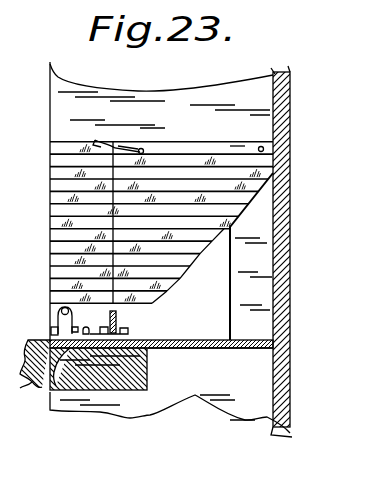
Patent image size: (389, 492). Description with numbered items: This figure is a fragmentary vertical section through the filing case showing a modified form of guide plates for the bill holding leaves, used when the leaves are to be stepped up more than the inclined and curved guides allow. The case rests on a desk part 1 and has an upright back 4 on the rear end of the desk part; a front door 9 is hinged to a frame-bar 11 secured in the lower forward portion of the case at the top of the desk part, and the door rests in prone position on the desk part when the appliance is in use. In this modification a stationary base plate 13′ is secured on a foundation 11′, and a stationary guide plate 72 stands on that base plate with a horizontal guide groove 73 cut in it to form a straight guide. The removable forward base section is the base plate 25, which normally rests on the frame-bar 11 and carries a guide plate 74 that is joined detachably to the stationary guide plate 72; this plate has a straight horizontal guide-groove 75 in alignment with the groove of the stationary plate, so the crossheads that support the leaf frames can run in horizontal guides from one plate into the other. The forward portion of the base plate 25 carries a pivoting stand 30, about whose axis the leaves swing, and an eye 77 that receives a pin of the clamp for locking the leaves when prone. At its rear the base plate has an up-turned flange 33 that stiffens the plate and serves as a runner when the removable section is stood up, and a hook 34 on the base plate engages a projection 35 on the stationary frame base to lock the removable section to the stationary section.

The desk part 1 is at (152, 413).
The upright back 4 is at (291, 240).
The front door 9 is at (26, 350).
The frame-bar 11 is at (101, 390).
The foundation 11′ is at (258, 348).
The base plate 13′ is at (214, 347).
The base plate 25 is at (47, 384).
The pivoting stand 30 is at (58, 314).
The up-turned flange or rib 33 is at (117, 321).
The hook 34 is at (148, 363).
The projection 35 is at (122, 327).
The guide plate 72 is at (198, 160).
The horizontal guide groove 73 is at (227, 159).
The guide plate 74 is at (63, 149).
The horizontal guide-groove 75 is at (58, 187).
The eye 77 is at (51, 324).